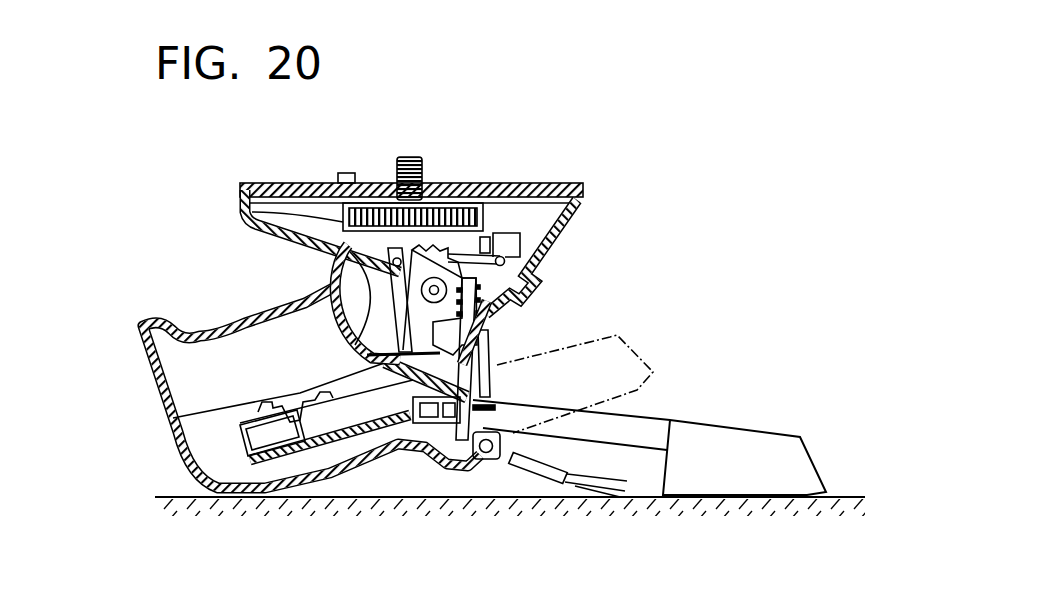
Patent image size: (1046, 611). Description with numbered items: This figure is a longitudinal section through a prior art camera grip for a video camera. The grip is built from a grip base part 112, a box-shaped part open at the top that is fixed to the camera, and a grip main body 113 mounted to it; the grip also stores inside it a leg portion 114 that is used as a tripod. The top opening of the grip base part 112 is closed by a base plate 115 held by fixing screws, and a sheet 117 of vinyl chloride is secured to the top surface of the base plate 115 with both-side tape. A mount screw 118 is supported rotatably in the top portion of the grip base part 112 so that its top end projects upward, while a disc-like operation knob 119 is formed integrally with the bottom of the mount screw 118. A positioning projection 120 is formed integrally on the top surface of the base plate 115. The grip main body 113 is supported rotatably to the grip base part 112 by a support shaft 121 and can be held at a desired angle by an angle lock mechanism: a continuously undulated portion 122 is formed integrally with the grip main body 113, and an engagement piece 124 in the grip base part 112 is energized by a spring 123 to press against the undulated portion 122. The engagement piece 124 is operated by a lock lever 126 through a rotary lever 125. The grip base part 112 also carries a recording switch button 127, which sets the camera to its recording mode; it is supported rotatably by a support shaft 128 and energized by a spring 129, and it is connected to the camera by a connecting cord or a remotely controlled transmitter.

The grip base part 112 is at (550, 245).
The grip main body 113 is at (137, 353).
The leg portion 114 is at (767, 437).
The base plate 115 is at (485, 243).
The sheet 117 is at (488, 183).
The mount screw 118 is at (403, 153).
The operation knob 119 is at (262, 235).
The positioning projection 120 is at (347, 173).
The support shaft 121 is at (505, 282).
The undulated portion 122 is at (440, 375).
The spring 123 is at (500, 313).
The engagement piece 124 is at (487, 372).
The rotary lever 125 is at (545, 240).
The lock lever 126 is at (535, 225).
The recording switch button 127 is at (300, 307).
The support shaft 128 is at (335, 248).
The spring 129 is at (410, 342).